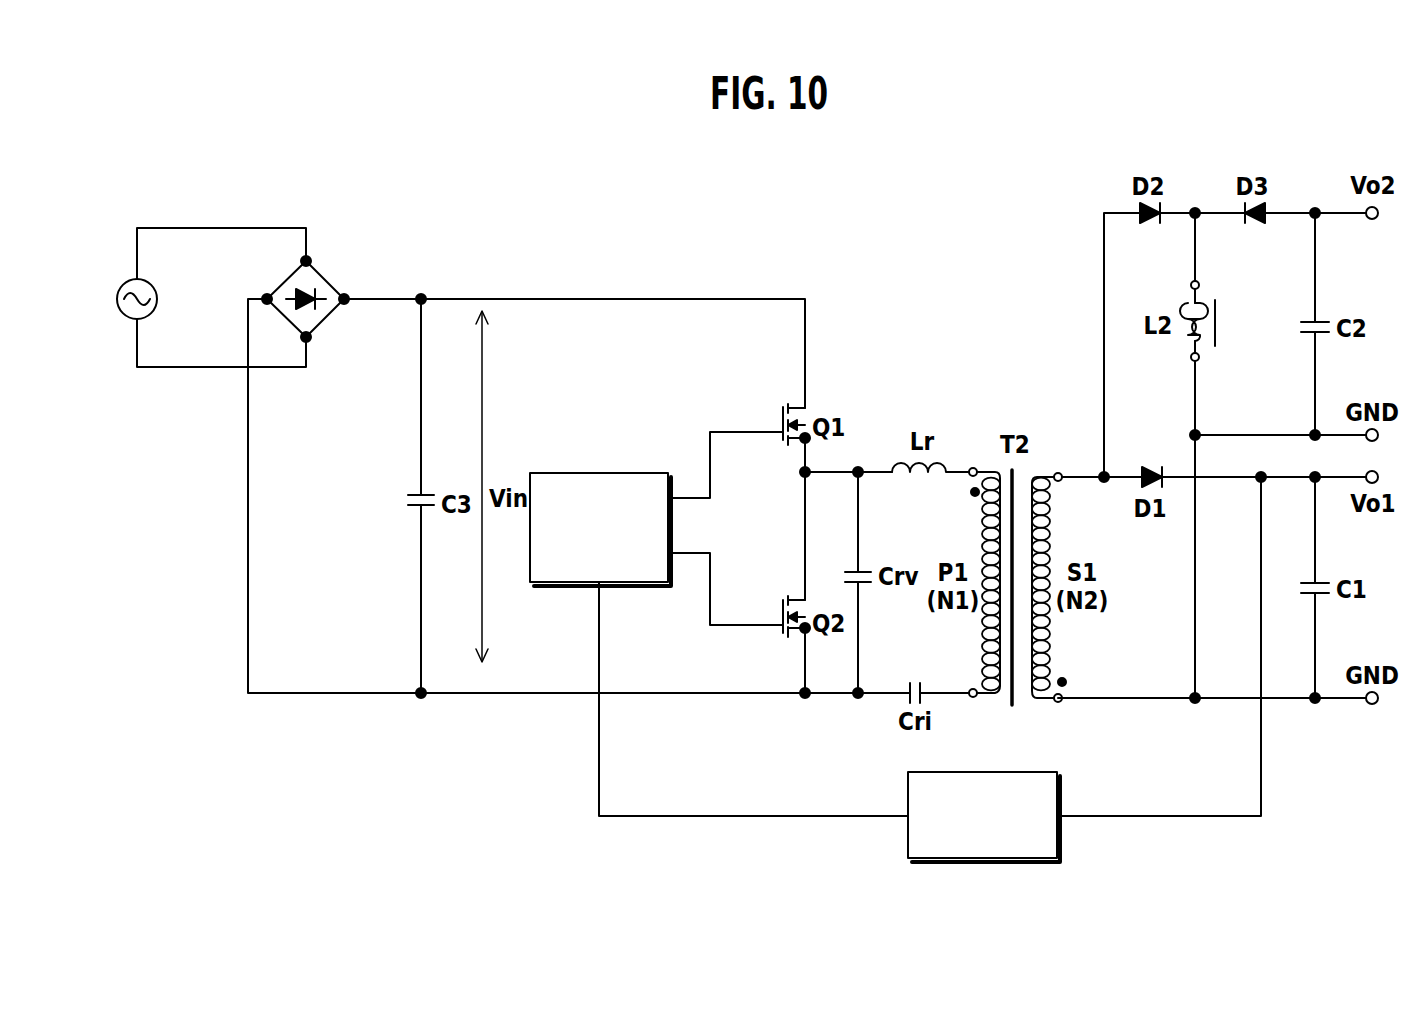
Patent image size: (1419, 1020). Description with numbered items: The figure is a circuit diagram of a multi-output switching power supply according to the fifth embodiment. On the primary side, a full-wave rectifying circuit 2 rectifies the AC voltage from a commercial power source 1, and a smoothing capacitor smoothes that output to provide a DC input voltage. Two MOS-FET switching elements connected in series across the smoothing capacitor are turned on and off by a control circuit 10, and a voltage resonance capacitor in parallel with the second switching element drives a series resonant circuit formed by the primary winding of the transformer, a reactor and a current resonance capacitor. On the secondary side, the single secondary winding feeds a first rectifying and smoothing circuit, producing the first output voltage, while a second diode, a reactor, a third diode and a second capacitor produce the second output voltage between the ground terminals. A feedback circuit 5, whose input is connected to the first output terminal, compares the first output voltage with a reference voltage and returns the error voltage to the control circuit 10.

The commercial power source 1 is at (116, 299).
The full-wave rectifying circuit 2 is at (324, 279).
The control circuit 10 is at (593, 473).
The feedback circuit 5 is at (1060, 833).